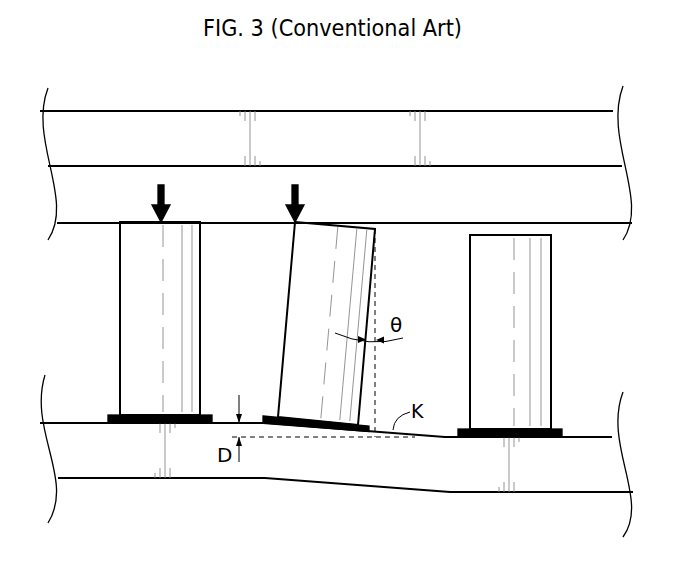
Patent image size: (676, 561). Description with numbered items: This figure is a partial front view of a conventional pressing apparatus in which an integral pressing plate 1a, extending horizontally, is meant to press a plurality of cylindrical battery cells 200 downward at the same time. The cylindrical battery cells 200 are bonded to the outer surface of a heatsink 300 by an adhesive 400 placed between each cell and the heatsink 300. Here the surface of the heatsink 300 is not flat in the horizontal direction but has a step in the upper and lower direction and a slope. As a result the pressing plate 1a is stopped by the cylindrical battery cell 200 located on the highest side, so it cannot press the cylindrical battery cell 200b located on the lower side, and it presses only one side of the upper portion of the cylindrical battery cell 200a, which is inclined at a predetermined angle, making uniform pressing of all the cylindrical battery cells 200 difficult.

The pressing plate 1a is at (587, 217).
The heatsink 300 is at (108, 458).
The adhesive 400 is at (108, 416).
The cylindrical battery cells 200 is at (133, 275).
The inclined cylindrical battery cell 200a is at (307, 273).
The cylindrical battery cell located at a lower side 200b is at (484, 272).